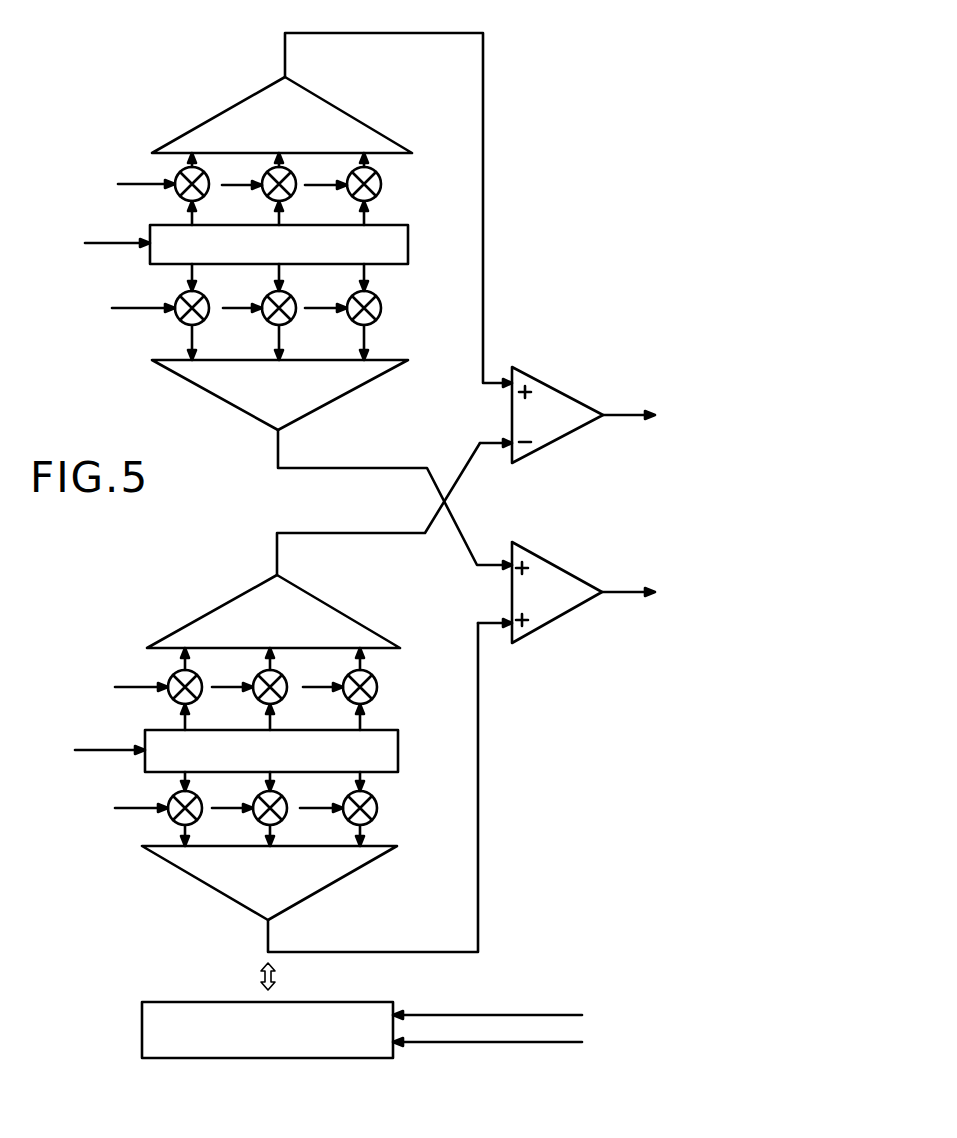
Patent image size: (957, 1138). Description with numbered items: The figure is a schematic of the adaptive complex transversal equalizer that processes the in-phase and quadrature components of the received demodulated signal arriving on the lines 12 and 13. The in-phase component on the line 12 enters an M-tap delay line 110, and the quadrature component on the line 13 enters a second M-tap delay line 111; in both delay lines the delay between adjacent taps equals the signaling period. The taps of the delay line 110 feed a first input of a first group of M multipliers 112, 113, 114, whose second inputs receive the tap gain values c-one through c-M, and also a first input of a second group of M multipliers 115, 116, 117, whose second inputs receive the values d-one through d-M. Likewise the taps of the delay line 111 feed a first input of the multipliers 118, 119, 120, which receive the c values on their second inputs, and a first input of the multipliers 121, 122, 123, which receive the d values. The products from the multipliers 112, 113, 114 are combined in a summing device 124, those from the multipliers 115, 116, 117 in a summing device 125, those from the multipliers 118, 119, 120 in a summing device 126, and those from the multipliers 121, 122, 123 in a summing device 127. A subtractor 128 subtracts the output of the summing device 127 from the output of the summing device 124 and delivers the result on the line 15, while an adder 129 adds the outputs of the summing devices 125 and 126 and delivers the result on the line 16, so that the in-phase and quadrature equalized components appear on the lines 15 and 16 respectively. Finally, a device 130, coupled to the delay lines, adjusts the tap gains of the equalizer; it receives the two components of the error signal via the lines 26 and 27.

The line 12 is at (108, 243).
The line 13 is at (100, 750).
The line 15 is at (628, 418).
The line 16 is at (628, 596).
The line 26 is at (482, 1015).
The line 27 is at (557, 1042).
The delay line 110 is at (279, 244).
The delay line 111 is at (271, 751).
The multiplier 112 is at (176, 192).
The multiplier 113 is at (296, 196).
The multiplier 114 is at (381, 190).
The multiplier 115 is at (176, 318).
The multiplier 116 is at (294, 320).
The multiplier 117 is at (380, 308).
The multiplier 118 is at (168, 816).
The multiplier 119 is at (287, 817).
The multiplier 120 is at (377, 808).
The multiplier 121 is at (170, 696).
The multiplier 122 is at (287, 697).
The multiplier 123 is at (377, 690).
The summing device 124 is at (282, 115).
The summing device 125 is at (280, 395).
The summing device 126 is at (269, 883).
The summing device 127 is at (273, 611).
The subtractor 128 is at (556, 382).
The adder 129 is at (562, 567).
The device 130 is at (267, 1030).